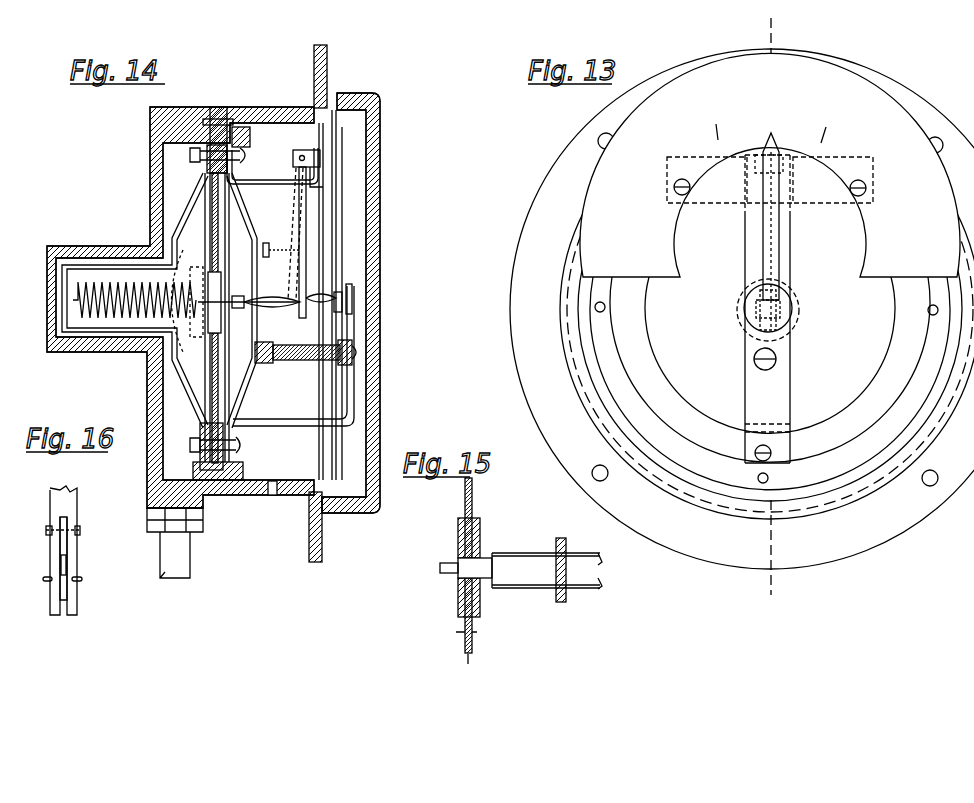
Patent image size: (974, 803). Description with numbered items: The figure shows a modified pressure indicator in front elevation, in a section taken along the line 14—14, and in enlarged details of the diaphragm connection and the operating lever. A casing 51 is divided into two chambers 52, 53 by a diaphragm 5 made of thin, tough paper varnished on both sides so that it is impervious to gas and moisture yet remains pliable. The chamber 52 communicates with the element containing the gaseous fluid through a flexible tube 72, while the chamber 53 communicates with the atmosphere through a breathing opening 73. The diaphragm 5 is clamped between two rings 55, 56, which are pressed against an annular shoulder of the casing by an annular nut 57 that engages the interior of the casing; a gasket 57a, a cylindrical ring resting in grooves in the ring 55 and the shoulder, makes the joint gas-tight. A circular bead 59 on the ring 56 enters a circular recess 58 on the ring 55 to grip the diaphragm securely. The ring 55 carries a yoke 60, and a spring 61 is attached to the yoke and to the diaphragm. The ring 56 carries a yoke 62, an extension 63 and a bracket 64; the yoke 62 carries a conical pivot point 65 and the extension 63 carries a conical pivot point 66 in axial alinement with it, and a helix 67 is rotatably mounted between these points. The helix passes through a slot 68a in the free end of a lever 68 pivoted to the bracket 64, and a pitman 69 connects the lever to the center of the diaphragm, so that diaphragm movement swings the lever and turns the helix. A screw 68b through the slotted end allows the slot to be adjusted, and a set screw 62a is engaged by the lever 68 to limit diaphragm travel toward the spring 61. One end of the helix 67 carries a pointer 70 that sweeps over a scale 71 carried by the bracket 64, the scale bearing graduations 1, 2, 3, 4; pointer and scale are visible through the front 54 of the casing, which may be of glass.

In FIG. 13, the scale mark 1 is at (628, 177).
In FIG. 13, the scale mark 2 is at (721, 140).
In FIG. 13, the scale mark 3 is at (820, 141).
In FIG. 13, the scale mark 4 is at (910, 183).
In FIG. 14, the diaphragm 5 is at (216, 346).
In FIG. 15, the diaphragm 5 is at (465, 577).
In FIG. 13, the section line 14 is at (769, 308).
In FIG. 14, the casing 51 is at (286, 303).
In FIG. 13, the casing 51 is at (742, 309).
In FIG. 14, the chamber 52 is at (206, 446).
In FIG. 14, the chamber 53 is at (293, 364).
In FIG. 14, the side of the casing 54 is at (372, 378).
In FIG. 14, the ring 55 is at (190, 152).
In FIG. 14, the ring 56 is at (250, 128).
In FIG. 13, the ring 56 is at (770, 383).
In FIG. 14, the annular nut 57 is at (250, 150).
In FIG. 13, the annular nut 57 is at (655, 430).
In FIG. 14, the gasket 57a is at (212, 123).
In FIG. 14, the circular recess 58 is at (207, 168).
In FIG. 14, the circular bead 59 is at (246, 166).
In FIG. 14, the yoke 60 is at (174, 246).
In FIG. 14, the spring 61 is at (105, 280).
In FIG. 14, the yoke 62 is at (299, 250).
In FIG. 13, the yoke 62 is at (786, 261).
In FIG. 15, the yoke 62 is at (556, 545).
In FIG. 14, the set screw 62a is at (263, 250).
In FIG. 13, the extension 63 is at (782, 381).
In FIG. 14, the bracket 64 is at (291, 215).
In FIG. 13, the bracket 64 is at (745, 196).
In FIG. 14, the conical pivot point 65 is at (300, 305).
In FIG. 14, the conical pivot point 66 is at (342, 310).
In FIG. 14, the helix 67 is at (270, 302).
In FIG. 13, the helix 67 is at (792, 303).
In FIG. 16, the helix 67 is at (65, 566).
In FIG. 14, the lever 68 is at (290, 240).
In FIG. 13, the lever 68 is at (765, 261).
In FIG. 16, the lever 68 is at (66, 498).
In FIG. 15, the lever 68 is at (604, 560).
In FIG. 16, the slot 68a is at (66, 546).
In FIG. 15, the slot 68a is at (605, 573).
In FIG. 14, the link pin 68b is at (303, 279).
In FIG. 16, the link pin 68b is at (79, 530).
In FIG. 14, the pitman 69 is at (260, 300).
In FIG. 16, the pitman 69 is at (43, 579).
In FIG. 15, the pitman 69 is at (515, 583).
In FIG. 14, the pointer 70 is at (342, 226).
In FIG. 13, the pointer 70 is at (779, 208).
In FIG. 14, the scale 71 is at (336, 178).
In FIG. 13, the scale 71 is at (770, 165).
In FIG. 14, the flexible tube 72 is at (182, 553).
In FIG. 14, the breathing opening 73 is at (272, 490).